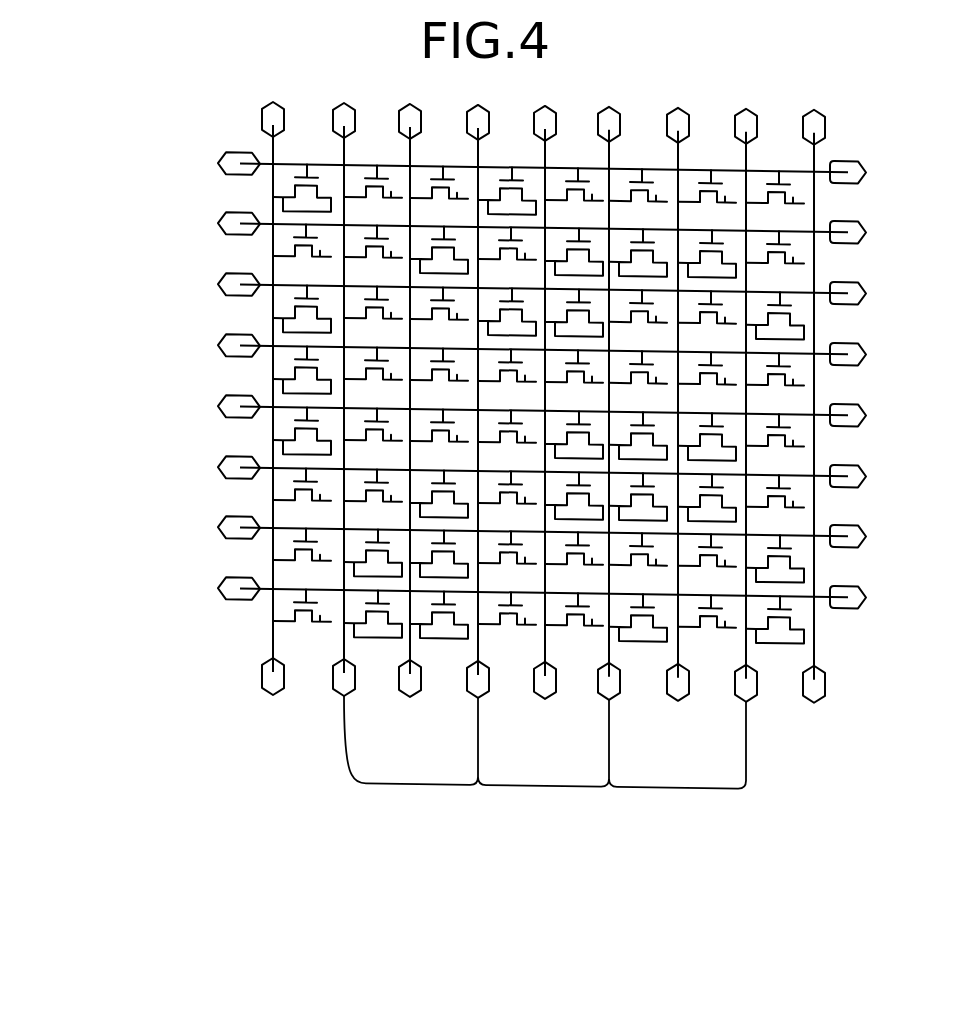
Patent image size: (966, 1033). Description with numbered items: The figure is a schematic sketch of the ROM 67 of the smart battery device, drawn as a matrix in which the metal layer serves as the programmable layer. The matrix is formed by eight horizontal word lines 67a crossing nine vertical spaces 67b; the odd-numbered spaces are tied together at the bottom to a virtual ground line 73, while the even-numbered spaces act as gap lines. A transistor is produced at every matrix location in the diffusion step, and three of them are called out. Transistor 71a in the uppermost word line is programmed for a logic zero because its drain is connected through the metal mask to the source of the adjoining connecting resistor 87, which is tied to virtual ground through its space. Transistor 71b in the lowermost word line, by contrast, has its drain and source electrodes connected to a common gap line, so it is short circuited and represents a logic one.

The ROM memory 67 is at (862, 127).
The word lines 67a is at (128, 123).
The spaces 67b is at (862, 853).
The transistor 71a is at (806, 204).
The transistor 71b is at (796, 633).
The virtual ground line 73 is at (545, 787).
The connecting resistor 87 is at (695, 195).